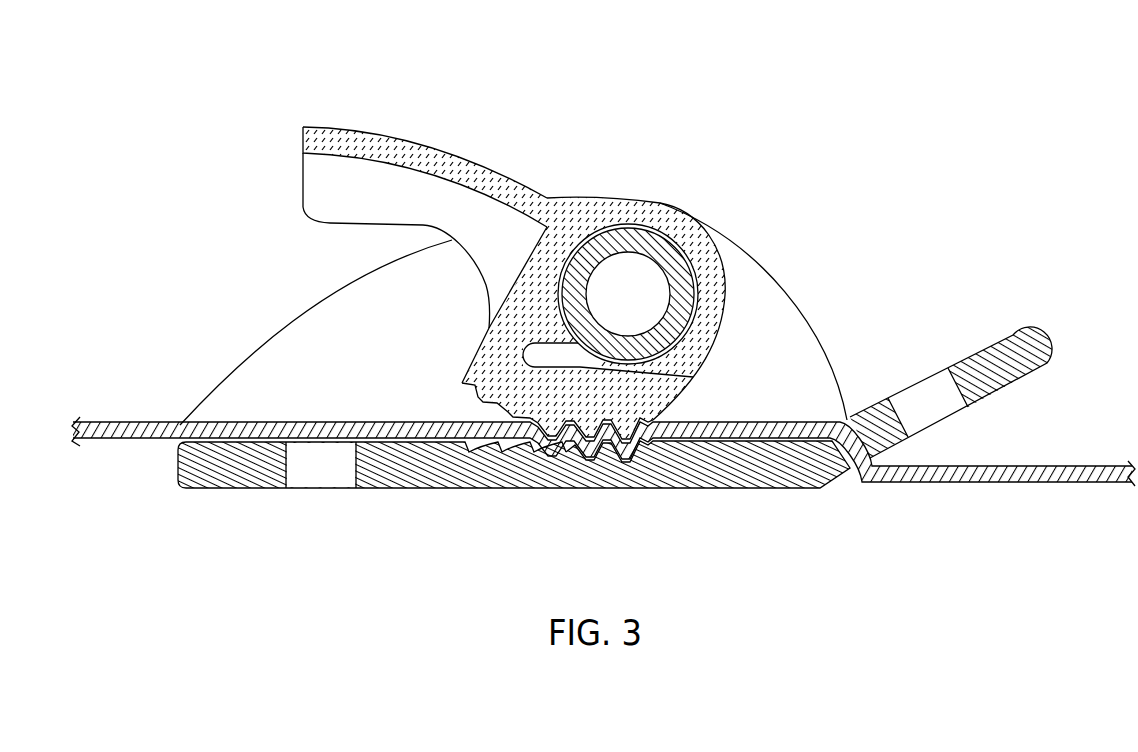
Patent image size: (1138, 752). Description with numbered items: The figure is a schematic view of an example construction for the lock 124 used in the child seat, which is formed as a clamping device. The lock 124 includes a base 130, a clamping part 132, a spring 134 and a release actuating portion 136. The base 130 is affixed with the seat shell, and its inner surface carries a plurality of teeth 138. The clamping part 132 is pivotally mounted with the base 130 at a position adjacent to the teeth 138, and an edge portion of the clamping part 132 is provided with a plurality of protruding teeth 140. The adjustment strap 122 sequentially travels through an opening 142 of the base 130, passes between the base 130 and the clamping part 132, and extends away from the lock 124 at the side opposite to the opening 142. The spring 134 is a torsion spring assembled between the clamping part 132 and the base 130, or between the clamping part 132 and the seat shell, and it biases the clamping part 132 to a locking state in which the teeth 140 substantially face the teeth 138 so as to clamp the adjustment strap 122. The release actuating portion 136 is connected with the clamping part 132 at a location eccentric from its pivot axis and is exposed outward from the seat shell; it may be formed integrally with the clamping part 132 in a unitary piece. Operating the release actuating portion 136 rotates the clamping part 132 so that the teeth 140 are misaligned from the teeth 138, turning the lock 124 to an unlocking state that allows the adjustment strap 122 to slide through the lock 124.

The adjustment strap 122 is at (122, 441).
The lock 124 is at (271, 101).
The base 130 is at (715, 477).
The clamping part 132 is at (720, 263).
The spring 134 is at (632, 240).
The release actuating portion 136 is at (437, 145).
The teeth 138 is at (507, 447).
The protruding teeth 140 is at (475, 400).
The opening 142 is at (849, 469).